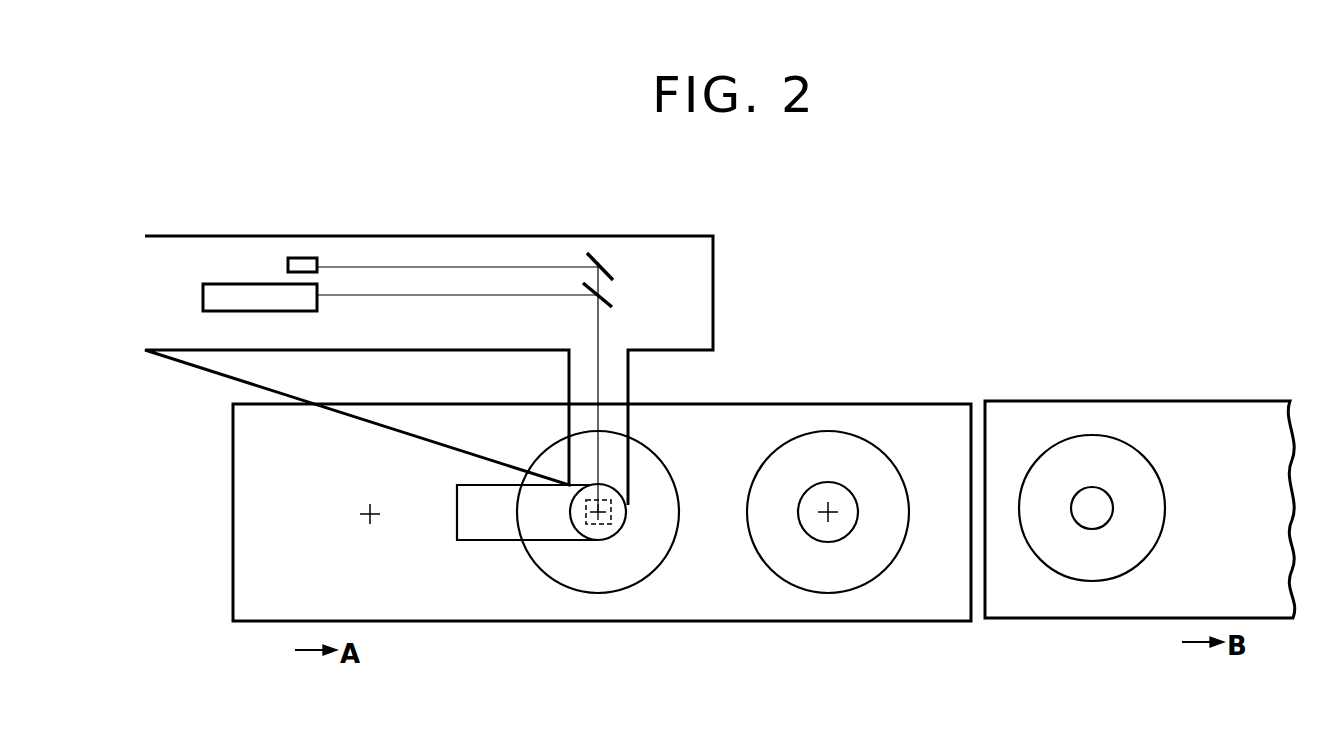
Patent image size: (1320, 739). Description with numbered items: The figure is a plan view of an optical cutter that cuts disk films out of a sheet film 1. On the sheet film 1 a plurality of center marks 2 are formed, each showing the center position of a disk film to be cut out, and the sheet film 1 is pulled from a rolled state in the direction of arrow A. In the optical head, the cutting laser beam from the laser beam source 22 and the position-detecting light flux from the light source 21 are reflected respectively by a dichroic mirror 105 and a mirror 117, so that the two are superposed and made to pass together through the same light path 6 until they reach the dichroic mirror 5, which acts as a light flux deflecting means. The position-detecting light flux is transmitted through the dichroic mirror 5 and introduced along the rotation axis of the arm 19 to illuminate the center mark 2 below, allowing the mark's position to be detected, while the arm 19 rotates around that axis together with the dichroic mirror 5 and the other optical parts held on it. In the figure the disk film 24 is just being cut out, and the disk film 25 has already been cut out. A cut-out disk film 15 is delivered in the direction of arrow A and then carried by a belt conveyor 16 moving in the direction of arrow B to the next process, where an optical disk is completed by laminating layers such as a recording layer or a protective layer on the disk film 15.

The sheet film 1 is at (265, 622).
The center mark 2 is at (368, 513).
The dichroic mirror 5 is at (612, 496).
The light path 6 is at (600, 340).
The disk film 15 is at (1078, 437).
The belt conveyor 16 is at (1247, 412).
The arm 19 is at (490, 541).
The light source 21 is at (303, 261).
The laser beam source 22 is at (240, 312).
The disk film 24 is at (614, 575).
The disk film 25 is at (858, 568).
The dichroic mirror 105 is at (610, 302).
The mirror 117 is at (592, 258).